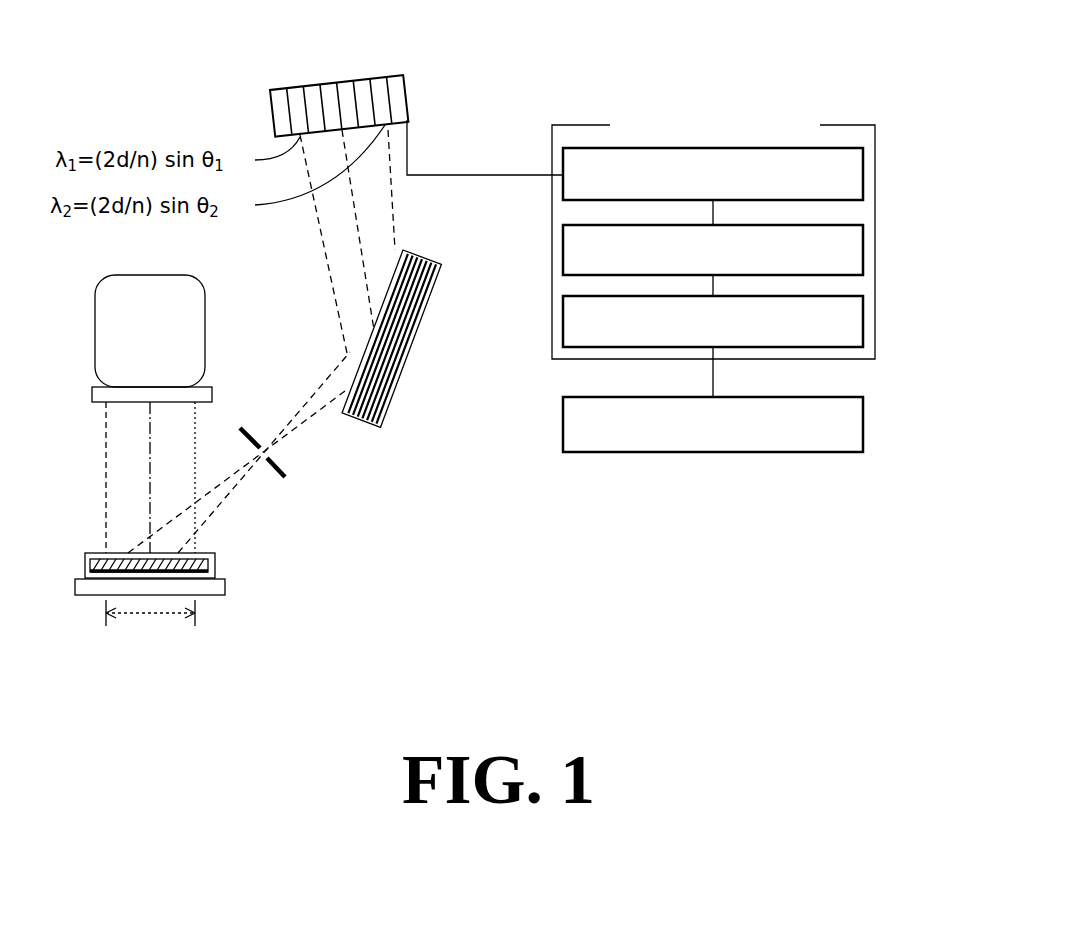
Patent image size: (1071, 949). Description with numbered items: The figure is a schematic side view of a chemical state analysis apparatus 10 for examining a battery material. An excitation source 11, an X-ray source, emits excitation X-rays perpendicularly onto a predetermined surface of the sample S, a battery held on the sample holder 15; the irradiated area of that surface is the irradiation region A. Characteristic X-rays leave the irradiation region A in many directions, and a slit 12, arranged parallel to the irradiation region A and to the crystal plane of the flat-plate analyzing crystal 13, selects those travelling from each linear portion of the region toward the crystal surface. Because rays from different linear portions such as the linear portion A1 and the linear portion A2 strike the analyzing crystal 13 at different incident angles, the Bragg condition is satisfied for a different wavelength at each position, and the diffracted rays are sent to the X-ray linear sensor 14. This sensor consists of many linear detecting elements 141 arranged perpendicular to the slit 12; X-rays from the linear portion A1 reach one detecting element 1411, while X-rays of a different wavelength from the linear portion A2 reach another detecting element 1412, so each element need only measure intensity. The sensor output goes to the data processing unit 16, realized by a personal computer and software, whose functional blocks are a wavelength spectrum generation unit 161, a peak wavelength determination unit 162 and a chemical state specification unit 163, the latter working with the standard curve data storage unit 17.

The chemical state analysis apparatus 10 is at (653, 593).
The excitation source 11 is at (118, 312).
The slit 12 is at (281, 478).
The analyzing crystal 13 is at (407, 327).
The X-ray linear sensor 14 is at (272, 112).
The detecting elements 141 is at (355, 100).
The detecting element 1411 is at (290, 88).
The detecting element 1412 is at (379, 77).
The sample holder 15 is at (208, 585).
The data processing unit 16 is at (752, 237).
The wavelength spectrum generation unit 161 is at (863, 150).
The peak wavelength determination unit 162 is at (863, 226).
The chemical state specification unit 163 is at (863, 300).
The standard curve data storage unit 17 is at (863, 399).
The sample S is at (90, 565).
The irradiation region A is at (150, 626).
The linear portion A1 is at (124, 553).
The linear portion A2 is at (183, 553).